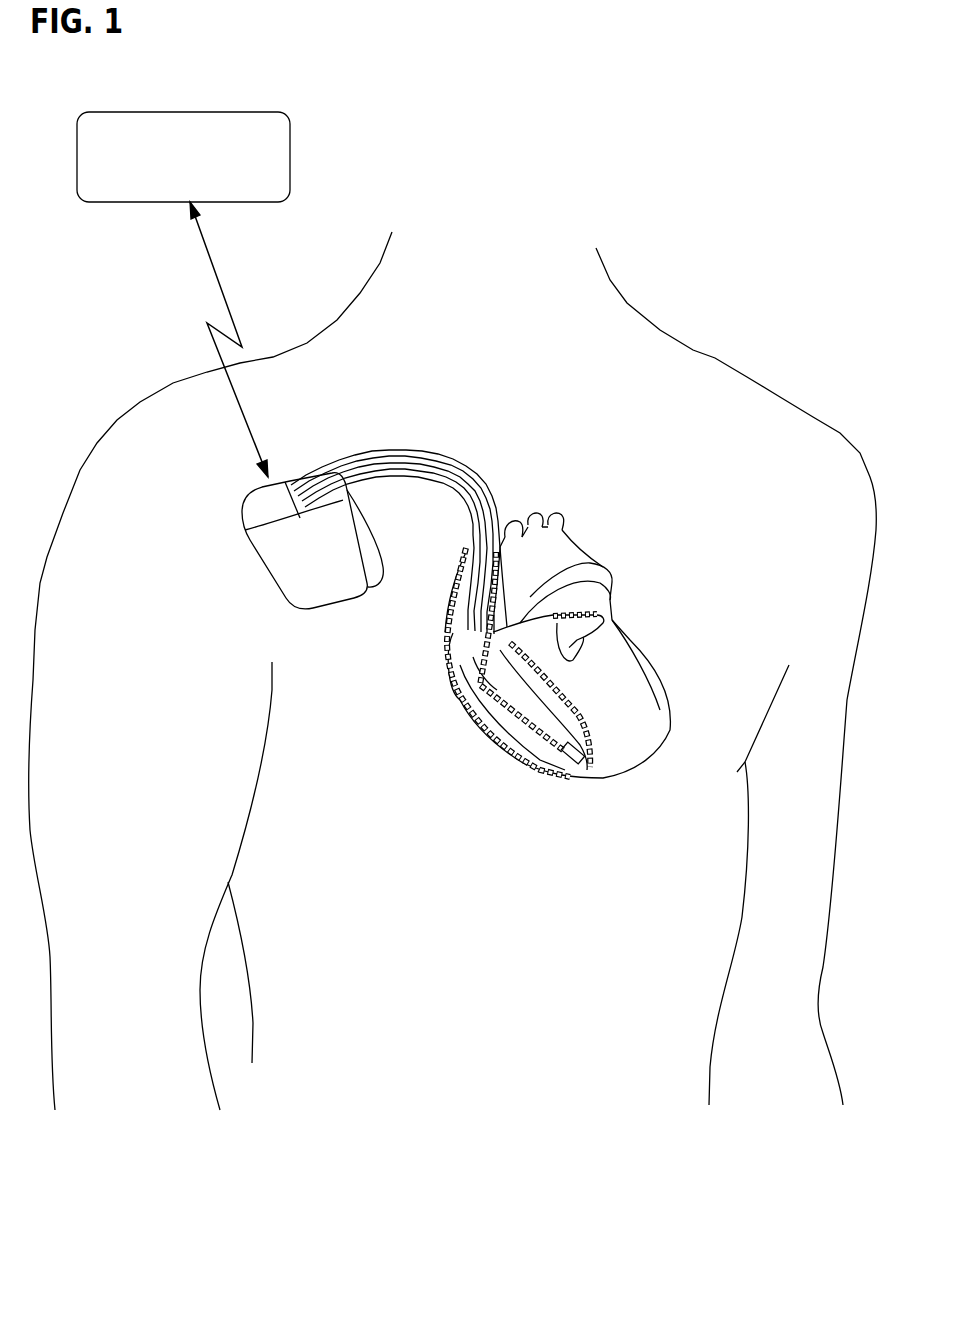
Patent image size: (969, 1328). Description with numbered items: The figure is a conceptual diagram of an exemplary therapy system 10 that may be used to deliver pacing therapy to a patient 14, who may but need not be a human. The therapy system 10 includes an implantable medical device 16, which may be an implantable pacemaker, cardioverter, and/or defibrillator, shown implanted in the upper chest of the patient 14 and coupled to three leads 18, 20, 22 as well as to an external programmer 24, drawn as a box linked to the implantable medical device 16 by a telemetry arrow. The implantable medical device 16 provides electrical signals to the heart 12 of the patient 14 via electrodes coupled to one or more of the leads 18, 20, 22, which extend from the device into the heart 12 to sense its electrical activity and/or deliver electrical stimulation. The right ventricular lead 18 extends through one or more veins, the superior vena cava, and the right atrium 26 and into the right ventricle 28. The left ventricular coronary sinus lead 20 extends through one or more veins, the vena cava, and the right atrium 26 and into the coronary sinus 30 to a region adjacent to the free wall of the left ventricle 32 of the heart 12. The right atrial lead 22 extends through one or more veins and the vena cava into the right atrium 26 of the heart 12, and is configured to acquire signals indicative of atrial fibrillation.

The therapy system 10 is at (680, 110).
The heart 12 is at (540, 688).
The patient 14 is at (713, 356).
The implantable medical device 16 is at (248, 569).
The right ventricular lead 18 is at (442, 473).
The left ventricular coronary sinus lead 20 is at (488, 486).
The right atrial lead 22 is at (468, 510).
The programmer 24 is at (197, 181).
The right atrium 26 is at (458, 663).
The right ventricle 28 is at (505, 730).
The coronary sinus 30 is at (520, 624).
The left ventricle 32 is at (633, 680).